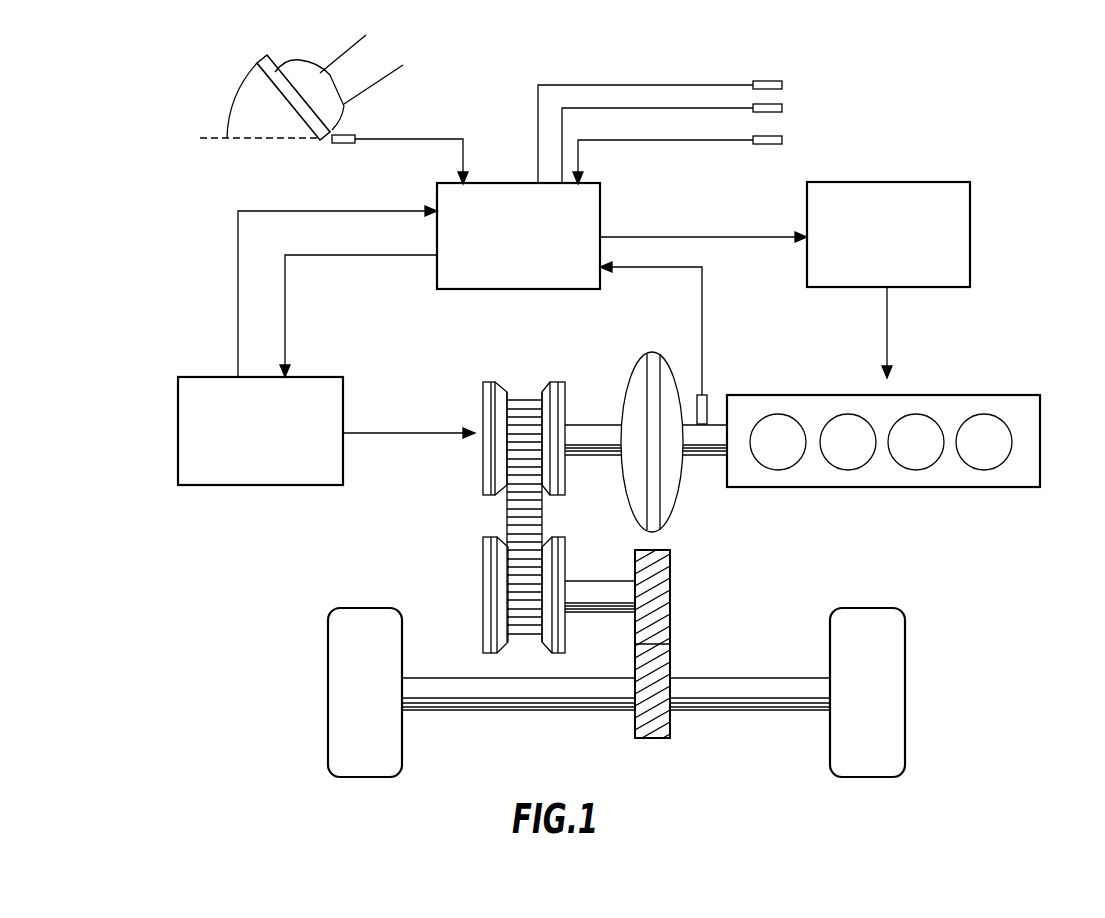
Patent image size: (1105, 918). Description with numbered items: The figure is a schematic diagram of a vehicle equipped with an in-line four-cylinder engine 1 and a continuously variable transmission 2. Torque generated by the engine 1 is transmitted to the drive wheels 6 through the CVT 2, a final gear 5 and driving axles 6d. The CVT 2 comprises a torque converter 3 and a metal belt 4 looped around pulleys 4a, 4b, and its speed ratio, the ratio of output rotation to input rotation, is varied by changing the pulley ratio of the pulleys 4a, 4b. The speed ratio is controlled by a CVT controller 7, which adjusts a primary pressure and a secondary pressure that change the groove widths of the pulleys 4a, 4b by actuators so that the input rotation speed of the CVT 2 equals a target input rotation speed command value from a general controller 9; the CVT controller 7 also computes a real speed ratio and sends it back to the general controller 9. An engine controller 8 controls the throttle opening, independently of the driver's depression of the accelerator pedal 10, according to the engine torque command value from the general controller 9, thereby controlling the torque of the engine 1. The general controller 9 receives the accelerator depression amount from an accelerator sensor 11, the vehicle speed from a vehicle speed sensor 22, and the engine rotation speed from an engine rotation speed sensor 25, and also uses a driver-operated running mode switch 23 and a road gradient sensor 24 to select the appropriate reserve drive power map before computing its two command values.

The engine 1 is at (1041, 440).
The continuously variable transmission 2 is at (449, 517).
The torque converter 3 is at (676, 500).
The metal belt 4 is at (495, 517).
The pulley 4a is at (483, 476).
The pulley 4b is at (483, 623).
The final gear 5 is at (671, 600).
The drive wheels 6 is at (906, 707).
The driving axles 6d is at (750, 692).
The CVT controller 7 is at (244, 486).
The engine controller 8 is at (972, 225).
The general controller 9 is at (528, 290).
The accelerator pedal 10 is at (272, 82).
The accelerator sensor 11 is at (338, 147).
The vehicle speed sensor 22 is at (784, 141).
The running mode switch 23 is at (784, 110).
The road gradient sensor 24 is at (784, 86).
The engine rotation speed sensor 25 is at (703, 410).